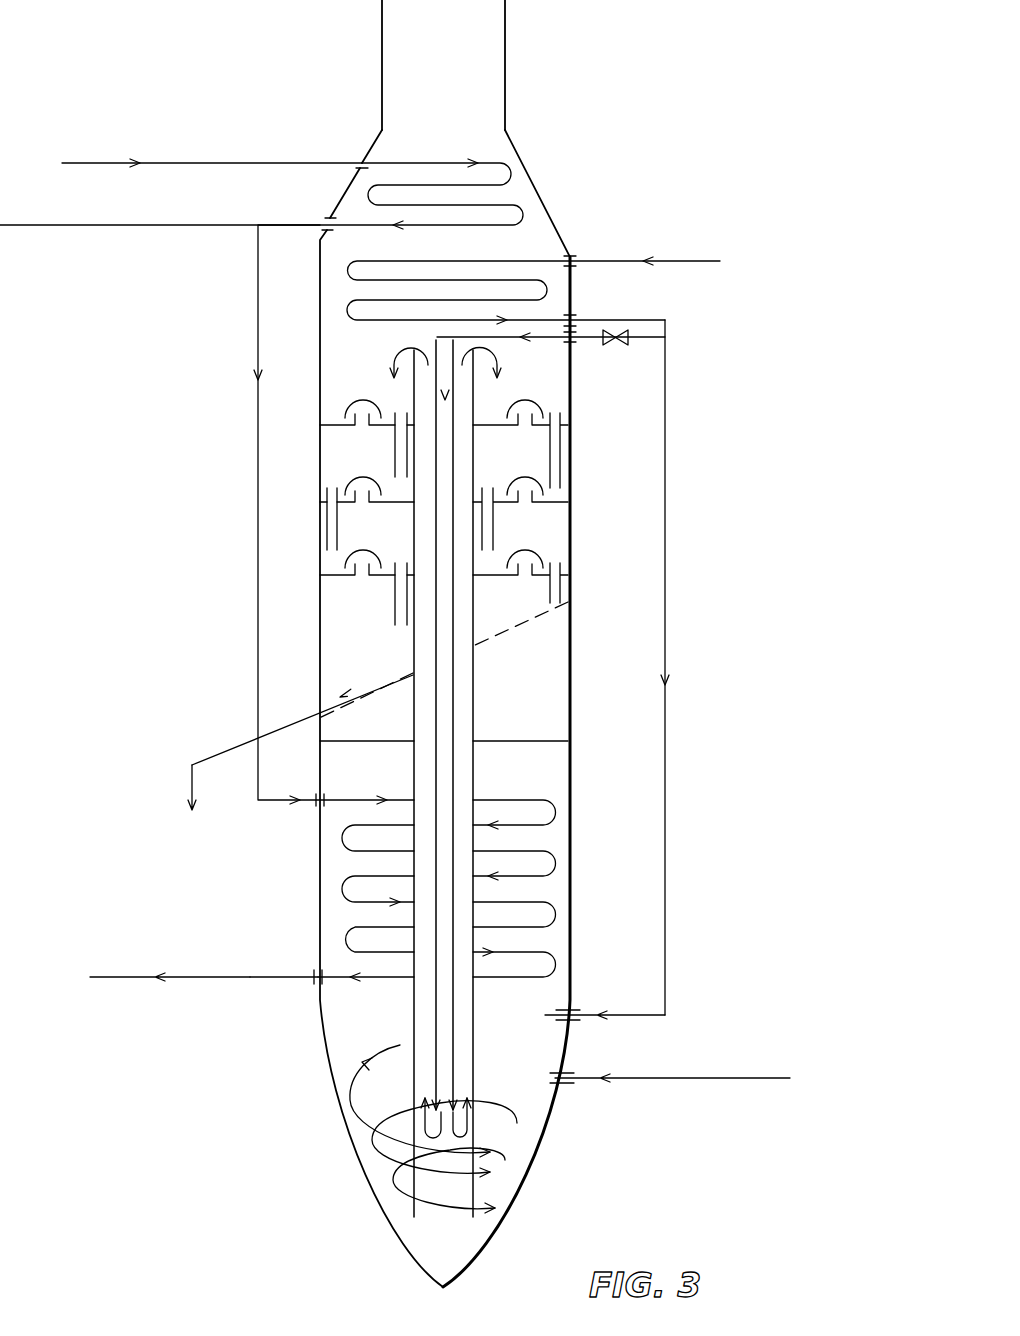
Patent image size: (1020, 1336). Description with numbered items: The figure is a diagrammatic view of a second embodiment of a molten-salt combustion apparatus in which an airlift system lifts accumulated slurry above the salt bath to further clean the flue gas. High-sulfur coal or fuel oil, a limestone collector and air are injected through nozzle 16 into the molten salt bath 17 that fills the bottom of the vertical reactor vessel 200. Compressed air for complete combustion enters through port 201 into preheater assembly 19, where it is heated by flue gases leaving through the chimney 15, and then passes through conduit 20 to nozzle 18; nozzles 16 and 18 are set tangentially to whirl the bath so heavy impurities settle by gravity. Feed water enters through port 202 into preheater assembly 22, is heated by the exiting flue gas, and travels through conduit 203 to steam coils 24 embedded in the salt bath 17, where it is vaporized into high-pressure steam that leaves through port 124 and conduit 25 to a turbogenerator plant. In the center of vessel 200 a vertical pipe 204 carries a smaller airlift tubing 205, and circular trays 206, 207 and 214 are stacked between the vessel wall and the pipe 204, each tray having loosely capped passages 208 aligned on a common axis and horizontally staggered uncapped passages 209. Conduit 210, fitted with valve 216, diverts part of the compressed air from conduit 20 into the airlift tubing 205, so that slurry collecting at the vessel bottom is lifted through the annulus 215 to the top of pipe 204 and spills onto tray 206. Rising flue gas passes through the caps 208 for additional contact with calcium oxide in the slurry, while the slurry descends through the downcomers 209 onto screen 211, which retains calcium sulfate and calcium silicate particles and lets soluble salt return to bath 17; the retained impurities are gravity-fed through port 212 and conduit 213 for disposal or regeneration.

The chimney 15 is at (470, 76).
The vertical reactor vessel 200 is at (556, 200).
The port 201 is at (575, 251).
The port 202 is at (362, 160).
The preheater assembly 22 is at (505, 172).
The preheater assembly 19 is at (535, 288).
The conduit 20 is at (683, 532).
The conduit 210 is at (655, 340).
The valve 216 is at (612, 345).
The airlift tubing 205 is at (455, 408).
The vertical pipe 204 is at (473, 703).
The capped passages 208 is at (358, 402).
The uncapped passages 209 is at (393, 447).
The circular tray 206 is at (490, 426).
The circular tray 207 is at (565, 503).
The circular tray 214 is at (565, 583).
The conduit 203 is at (257, 553).
The port 212 is at (318, 700).
The conduit 213 is at (205, 760).
The screen 211 is at (400, 676).
The molten salt bath 17 is at (515, 765).
The steam coils 24 is at (342, 888).
The port 124 is at (318, 981).
The conduit 25 is at (152, 990).
The annulus 215 is at (465, 1018).
The nozzle 18 is at (572, 1010).
The nozzle 16 is at (565, 1085).